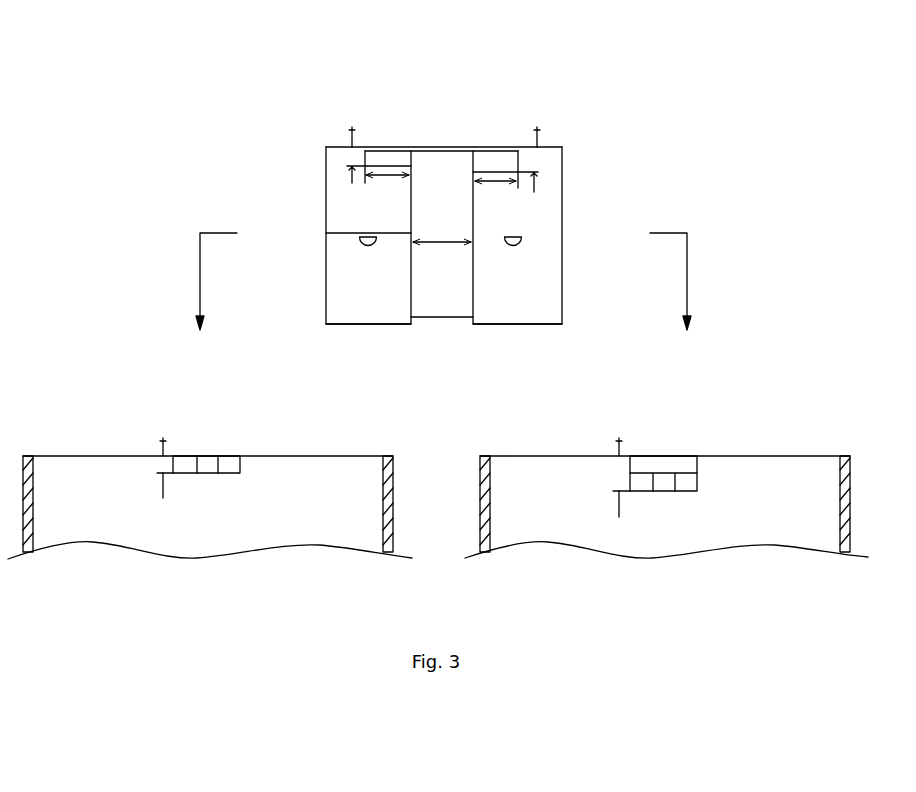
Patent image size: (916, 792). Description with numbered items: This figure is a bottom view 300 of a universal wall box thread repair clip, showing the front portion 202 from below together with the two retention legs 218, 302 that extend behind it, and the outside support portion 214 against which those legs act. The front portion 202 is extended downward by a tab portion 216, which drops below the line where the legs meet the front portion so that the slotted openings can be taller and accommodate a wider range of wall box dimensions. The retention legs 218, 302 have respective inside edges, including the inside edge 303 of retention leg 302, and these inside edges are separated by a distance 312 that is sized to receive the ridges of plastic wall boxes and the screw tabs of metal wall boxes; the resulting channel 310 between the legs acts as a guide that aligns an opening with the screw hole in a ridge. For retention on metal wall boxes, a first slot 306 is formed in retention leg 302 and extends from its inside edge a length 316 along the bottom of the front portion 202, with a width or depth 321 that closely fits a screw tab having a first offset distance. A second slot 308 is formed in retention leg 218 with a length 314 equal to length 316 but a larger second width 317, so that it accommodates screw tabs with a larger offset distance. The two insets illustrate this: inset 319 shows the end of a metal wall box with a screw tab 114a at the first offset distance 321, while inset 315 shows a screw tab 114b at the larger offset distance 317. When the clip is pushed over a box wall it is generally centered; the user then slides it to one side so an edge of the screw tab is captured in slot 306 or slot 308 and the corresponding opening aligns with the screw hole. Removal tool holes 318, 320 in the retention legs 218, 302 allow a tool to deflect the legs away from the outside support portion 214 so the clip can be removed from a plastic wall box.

The dosing device assembly 300 is at (658, 45).
The channel 310 is at (433, 153).
The tab portion 216 is at (462, 147).
The front portion 202 is at (365, 147).
The first slot 306 is at (382, 153).
The second slot 308 is at (503, 153).
The first offset distance 321 is at (352, 127).
The second width 317 is at (538, 127).
The retention leg 302 is at (341, 212).
The removal tool hole 320 is at (362, 243).
The length 316 is at (386, 176).
The length 314 is at (491, 182).
The distance 312 is at (446, 243).
The retention leg 218 is at (541, 218).
The removal tool hole 318 is at (520, 243).
The inside edge 303 is at (411, 300).
The outside support portion 214 is at (473, 302).
The screw tab 114a is at (207, 456).
The screw tab 114b is at (663, 473).
The inset 319 is at (288, 433).
The inset 315 is at (778, 434).